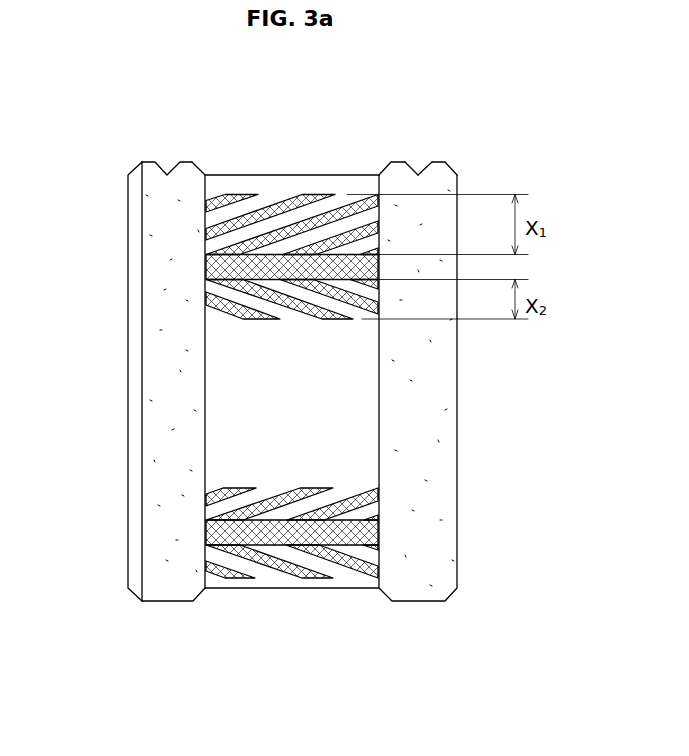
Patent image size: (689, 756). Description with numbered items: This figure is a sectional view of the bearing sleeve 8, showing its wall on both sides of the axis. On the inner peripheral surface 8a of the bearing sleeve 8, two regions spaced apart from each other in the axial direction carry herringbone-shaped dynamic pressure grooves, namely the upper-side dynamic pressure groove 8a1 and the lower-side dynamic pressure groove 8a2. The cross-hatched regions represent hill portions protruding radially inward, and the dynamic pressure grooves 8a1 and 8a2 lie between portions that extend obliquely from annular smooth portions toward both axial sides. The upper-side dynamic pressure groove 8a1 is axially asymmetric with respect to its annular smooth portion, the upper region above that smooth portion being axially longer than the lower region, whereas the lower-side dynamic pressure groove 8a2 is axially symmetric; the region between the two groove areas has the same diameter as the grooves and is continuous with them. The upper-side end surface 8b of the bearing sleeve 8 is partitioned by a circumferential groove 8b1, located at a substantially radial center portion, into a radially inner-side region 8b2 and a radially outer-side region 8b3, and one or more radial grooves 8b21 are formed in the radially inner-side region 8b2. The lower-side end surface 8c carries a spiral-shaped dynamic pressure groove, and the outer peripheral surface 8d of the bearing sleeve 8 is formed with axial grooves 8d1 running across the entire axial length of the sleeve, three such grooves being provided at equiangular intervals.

The bearing sleeve 8 is at (120, 175).
The inner peripheral surface 8a is at (378, 383).
The upper-side dynamic pressure groove 8a1 is at (252, 203).
The lower-side dynamic pressure groove 8a2 is at (254, 492).
The upper-side end surface 8b is at (184, 160).
The circumferential groove 8b1 is at (418, 174).
The radially inner-side region 8b2 is at (402, 163).
The radial groove 8b21 is at (396, 173).
The radially outer-side region 8b3 is at (437, 162).
The lower-side end surface 8c is at (172, 603).
The outer peripheral surface 8d is at (132, 325).
The axial groove 8d1 is at (140, 382).